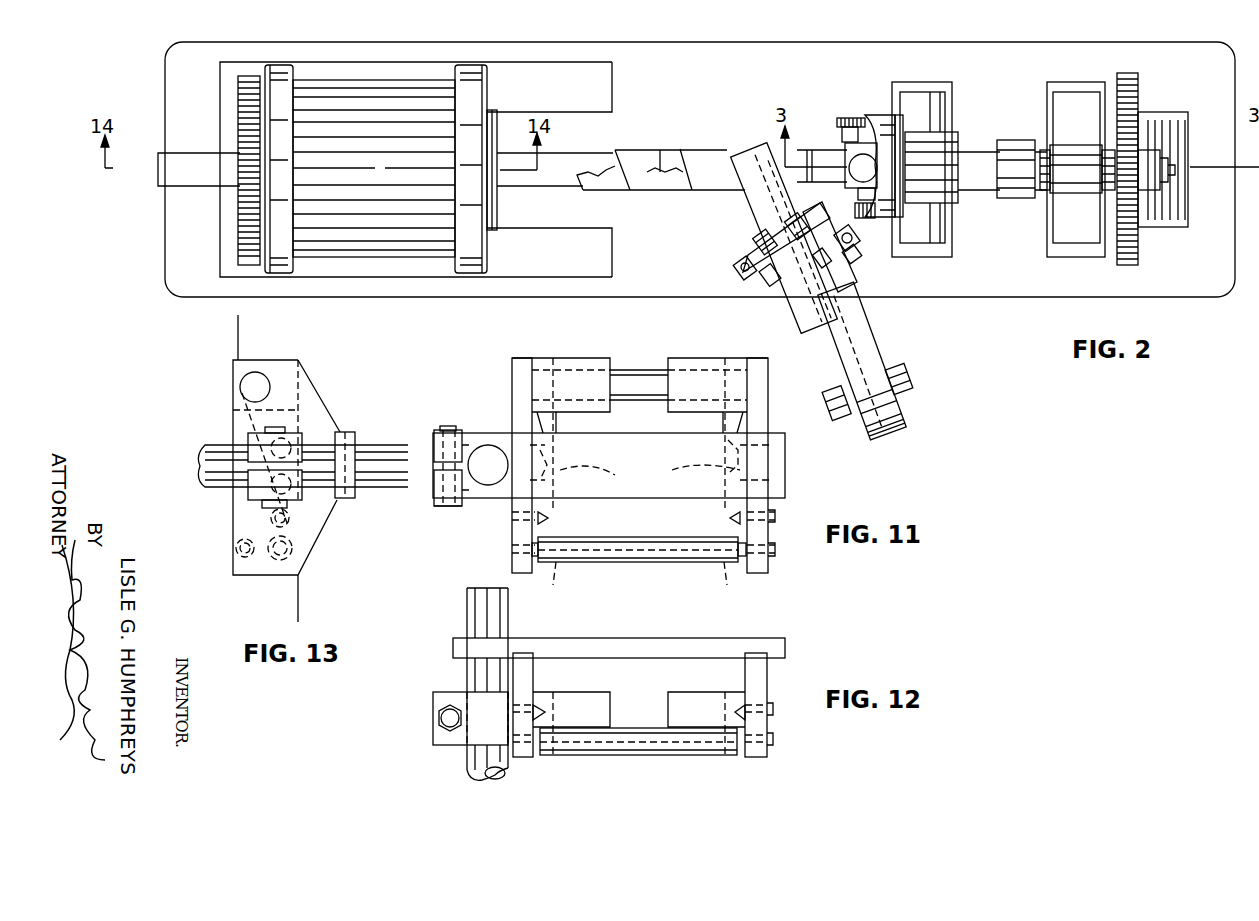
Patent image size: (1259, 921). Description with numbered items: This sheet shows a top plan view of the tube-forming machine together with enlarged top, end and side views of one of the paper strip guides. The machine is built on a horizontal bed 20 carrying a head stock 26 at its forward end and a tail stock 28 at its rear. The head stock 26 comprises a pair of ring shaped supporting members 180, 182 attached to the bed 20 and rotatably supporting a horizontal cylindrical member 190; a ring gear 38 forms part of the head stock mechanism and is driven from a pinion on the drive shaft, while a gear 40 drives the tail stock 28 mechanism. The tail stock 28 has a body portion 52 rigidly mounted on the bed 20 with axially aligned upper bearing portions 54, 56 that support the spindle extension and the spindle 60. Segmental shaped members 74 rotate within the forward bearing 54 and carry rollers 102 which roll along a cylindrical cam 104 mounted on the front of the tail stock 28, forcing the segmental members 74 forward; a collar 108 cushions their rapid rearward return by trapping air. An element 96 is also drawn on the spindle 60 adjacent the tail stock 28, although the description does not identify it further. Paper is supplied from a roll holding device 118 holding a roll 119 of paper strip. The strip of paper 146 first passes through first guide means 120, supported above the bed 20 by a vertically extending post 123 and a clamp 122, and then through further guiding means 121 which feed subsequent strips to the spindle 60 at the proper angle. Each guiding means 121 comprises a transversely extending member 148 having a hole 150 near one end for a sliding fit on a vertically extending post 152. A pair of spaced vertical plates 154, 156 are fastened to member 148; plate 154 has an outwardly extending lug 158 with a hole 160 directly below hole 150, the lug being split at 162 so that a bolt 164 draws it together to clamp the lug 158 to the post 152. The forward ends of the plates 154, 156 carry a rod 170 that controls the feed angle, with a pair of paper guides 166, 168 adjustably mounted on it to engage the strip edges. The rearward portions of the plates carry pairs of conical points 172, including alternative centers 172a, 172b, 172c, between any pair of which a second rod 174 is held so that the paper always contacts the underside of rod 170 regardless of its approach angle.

In FIG. 2, the horizontal bed 20 is at (637, 276).
In FIG. 2, the head stock 26 is at (387, 48).
In FIG. 2, the tail stock 28 is at (1015, 68).
In FIG. 2, the ring gear 38 is at (238, 88).
In FIG. 2, the gear 40 is at (1130, 74).
In FIG. 2, the body portion 52 is at (1173, 117).
In FIG. 2, the forward upper bearing portion 54 is at (917, 130).
In FIG. 2, the upper bearing portion 56 is at (1070, 143).
In FIG. 2, the spindle 60 is at (560, 165).
In FIG. 2, the segmental shaped member 74 is at (975, 150).
In FIG. 2, the coupling 96 is at (801, 150).
In FIG. 2, the roller 102 is at (851, 118).
In FIG. 2, the cylindrical cam 104 is at (882, 130).
In FIG. 2, the collar 108 is at (1012, 140).
In FIG. 2, the roll holding device 118 is at (905, 394).
In FIG. 2, the roll of paper strip 119 is at (895, 433).
In FIG. 2, the first guide means 120 is at (866, 280).
In FIG. 2, the guiding means 121 is at (760, 298).
In FIG. 2, the clamp 122 is at (862, 240).
In FIG. 2, the vertically extending post 123 is at (862, 258).
In FIG. 2, the strip of paper 146 is at (755, 205).
In FIG. 13, the strip of paper 146 is at (240, 330).
In FIG. 11, the transversely extending member 148 is at (787, 470).
In FIG. 12, the transversely extending member 148 is at (630, 638).
In FIG. 13, the transversely extending member 148 is at (345, 432).
In FIG. 11, the hole 150 is at (476, 458).
In FIG. 12, the vertically extending post 152 is at (467, 595).
In FIG. 13, the vertically extending post 152 is at (370, 485).
In FIG. 11, the vertically extending plate 154 is at (512, 375).
In FIG. 12, the vertically extending plate 154 is at (527, 680).
In FIG. 13, the vertically extending plate 154 is at (308, 385).
In FIG. 11, the vertically extending plate 156 is at (768, 412).
In FIG. 12, the vertically extending plate 156 is at (748, 680).
In FIG. 12, the lug 158 is at (455, 692).
In FIG. 12, the hole 160 is at (480, 740).
In FIG. 11, the split 162 is at (433, 465).
In FIG. 11, the bolt 164 is at (437, 506).
In FIG. 12, the bolt 164 is at (438, 716).
In FIG. 11, the paper guide 166 is at (560, 424).
In FIG. 11, the paper guide 168 is at (725, 424).
In FIG. 11, the rod 170 is at (626, 370).
In FIG. 13, the rod 170 is at (252, 383).
In FIG. 11, the conical points 172 is at (647, 585).
In FIG. 11, the centers 172a is at (552, 519).
In FIG. 11, the centers 172b is at (640, 471).
In FIG. 11, the rod portion 172c is at (735, 447).
In FIG. 11, the second rod 174 is at (640, 565).
In FIG. 12, the second rod 174 is at (690, 750).
In FIG. 2, the ring shaped supporting member 180 is at (286, 65).
In FIG. 2, the ring shaped supporting member 182 is at (469, 65).
In FIG. 2, the horizontal cylindrical member 190 is at (316, 90).